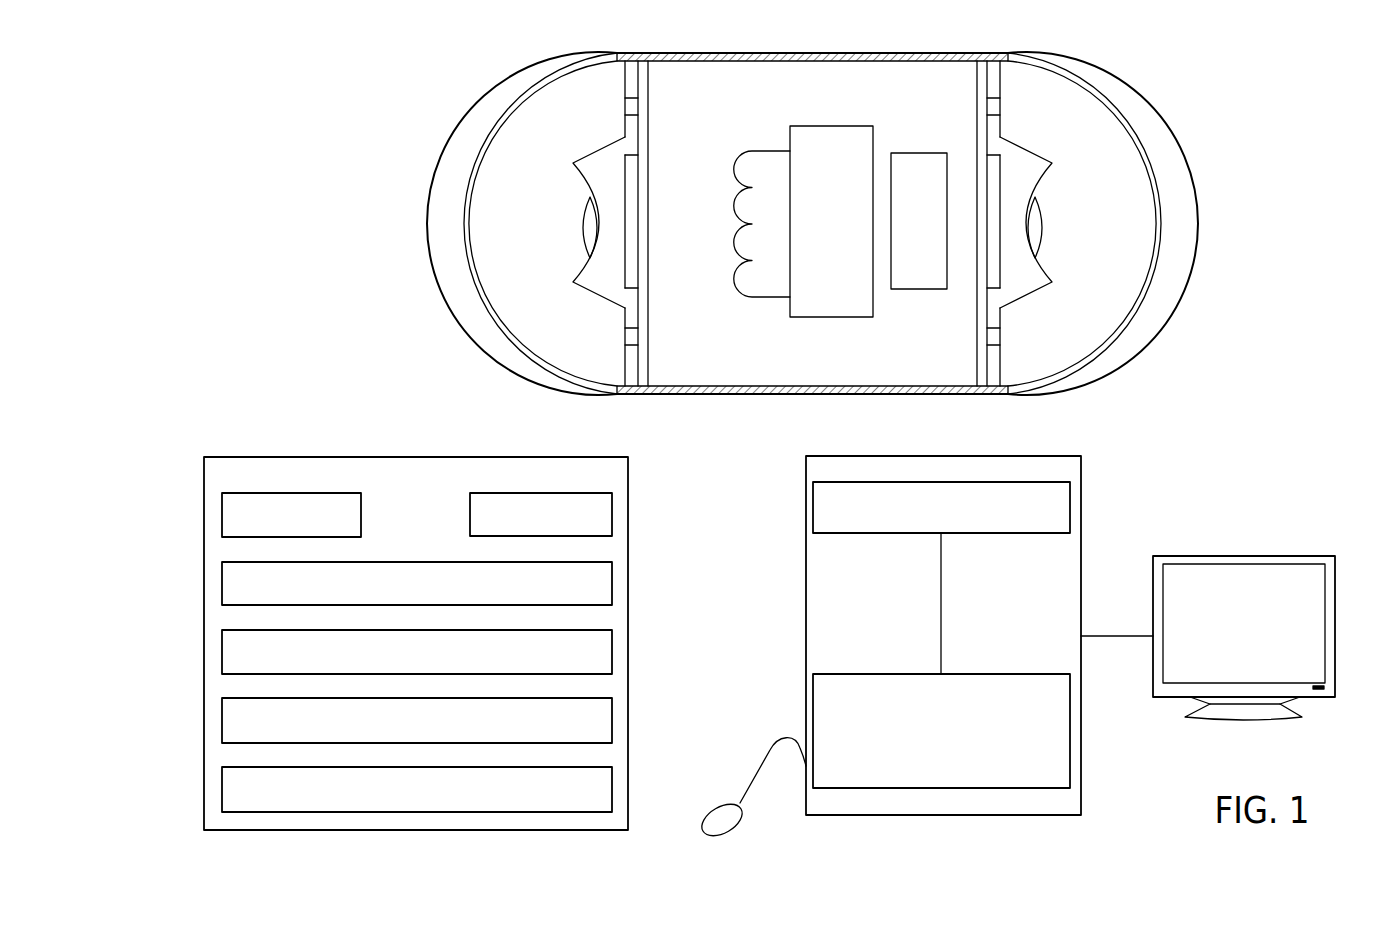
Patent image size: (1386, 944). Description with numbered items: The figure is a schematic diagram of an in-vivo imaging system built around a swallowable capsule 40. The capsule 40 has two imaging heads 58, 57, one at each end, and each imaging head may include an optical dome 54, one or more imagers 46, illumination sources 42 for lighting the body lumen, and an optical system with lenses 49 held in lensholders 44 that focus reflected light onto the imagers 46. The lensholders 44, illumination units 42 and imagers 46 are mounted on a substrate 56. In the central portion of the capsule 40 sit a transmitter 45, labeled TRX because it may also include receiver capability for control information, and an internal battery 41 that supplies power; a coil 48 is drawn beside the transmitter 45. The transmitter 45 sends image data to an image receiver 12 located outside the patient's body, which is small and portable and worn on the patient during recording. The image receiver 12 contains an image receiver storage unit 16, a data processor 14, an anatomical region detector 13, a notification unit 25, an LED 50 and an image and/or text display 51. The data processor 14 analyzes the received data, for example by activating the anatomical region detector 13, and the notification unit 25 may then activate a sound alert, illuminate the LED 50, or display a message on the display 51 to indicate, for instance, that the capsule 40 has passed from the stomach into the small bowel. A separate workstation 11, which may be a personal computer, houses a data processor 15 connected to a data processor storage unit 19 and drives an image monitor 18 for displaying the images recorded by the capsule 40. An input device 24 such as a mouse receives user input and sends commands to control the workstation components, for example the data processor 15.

The capsule 40 is at (825, 45).
The optical dome 54 is at (541, 80).
The imaging head 58 is at (462, 150).
The imaging head 57 is at (1158, 150).
The illumination sources 42 is at (625, 107).
The lensholders 44 is at (576, 162).
The lenses 49 is at (580, 208).
The imagers 46 is at (636, 262).
The substrate 56 is at (650, 356).
The antenna coil 48 is at (752, 151).
The transmitter 45 is at (830, 126).
The internal battery 41 is at (918, 153).
The image receiver 12 is at (254, 456).
The LED 50 is at (362, 518).
The image and/or text display 51 is at (613, 520).
The image receiver storage unit 16 is at (613, 583).
The notification unit 25 is at (613, 652).
The anatomical region detector 13 is at (613, 722).
The data processor 14 is at (613, 794).
The workstation 11 is at (1082, 512).
The data processor 15 is at (813, 503).
The data processor storage unit 19 is at (996, 674).
The image monitor 18 is at (1286, 556).
The input device 24 is at (753, 770).